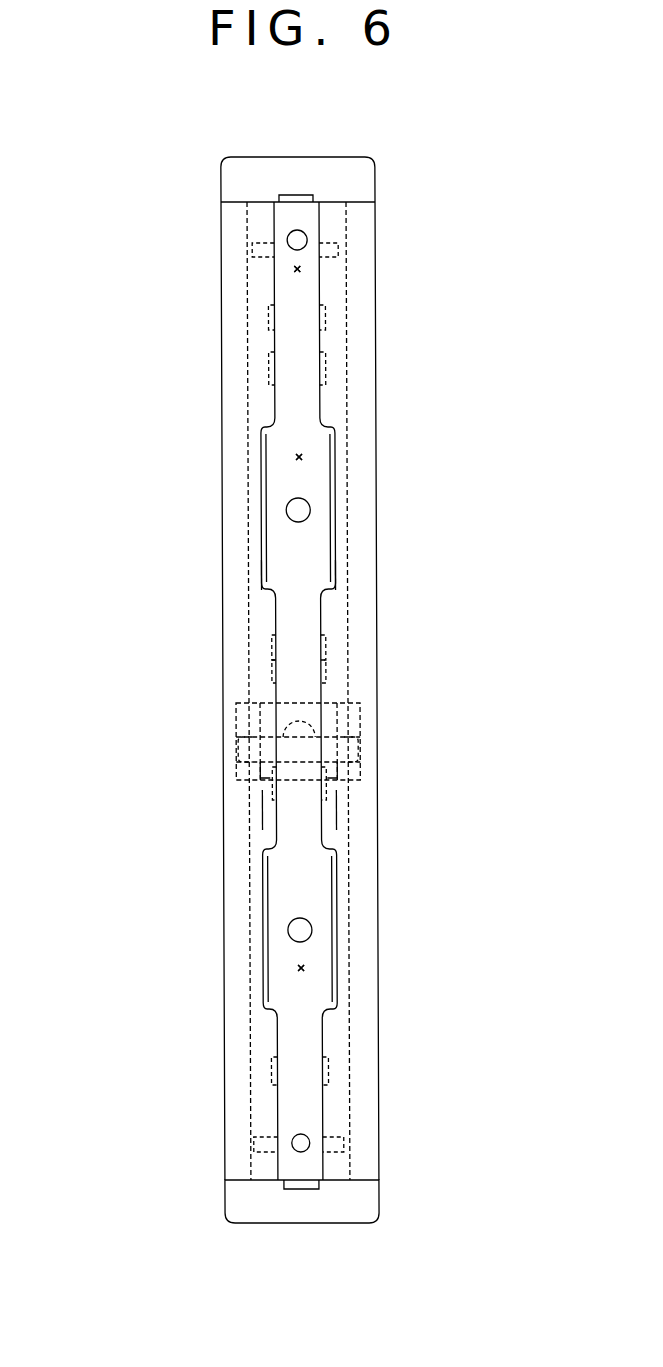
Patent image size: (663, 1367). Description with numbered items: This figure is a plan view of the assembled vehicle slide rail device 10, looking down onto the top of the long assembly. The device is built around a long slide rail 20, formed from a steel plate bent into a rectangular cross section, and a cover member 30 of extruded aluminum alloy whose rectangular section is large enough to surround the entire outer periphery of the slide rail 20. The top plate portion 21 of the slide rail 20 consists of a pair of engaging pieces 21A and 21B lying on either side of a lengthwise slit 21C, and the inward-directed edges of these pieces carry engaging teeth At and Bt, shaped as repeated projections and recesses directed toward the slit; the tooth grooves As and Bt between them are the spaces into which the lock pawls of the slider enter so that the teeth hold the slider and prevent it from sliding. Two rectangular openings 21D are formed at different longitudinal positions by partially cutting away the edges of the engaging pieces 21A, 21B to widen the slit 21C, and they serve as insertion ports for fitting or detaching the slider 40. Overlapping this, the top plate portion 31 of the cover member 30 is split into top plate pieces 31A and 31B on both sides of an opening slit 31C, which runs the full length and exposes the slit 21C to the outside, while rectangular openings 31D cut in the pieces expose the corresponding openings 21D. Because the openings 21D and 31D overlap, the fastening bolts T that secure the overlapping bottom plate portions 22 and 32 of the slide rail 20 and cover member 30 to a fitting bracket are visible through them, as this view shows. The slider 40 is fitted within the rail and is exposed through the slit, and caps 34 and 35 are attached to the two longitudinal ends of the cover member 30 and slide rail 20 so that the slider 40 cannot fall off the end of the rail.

The vehicle slide rail device 10 is at (437, 187).
The slide rail 20 is at (340, 264).
The top plate portion 21 is at (298, 508).
The engaging piece 21A is at (258, 610).
The engaging piece 21B is at (335, 617).
The slit 21C is at (295, 268).
The rectangular opening 21D is at (295, 457).
The bottom plate portion 22 is at (297, 285).
The cover member 30 is at (370, 327).
The top plate portion 31 is at (300, 929).
The top plate piece 31A is at (235, 807).
The top plate piece 31B is at (360, 805).
The opening slit 31C is at (220, 263).
The rectangular opening 31D is at (224, 720).
The bottom plate portion 32 is at (306, 411).
The cap 34 is at (334, 170).
The cap 35 is at (358, 1206).
The slider 40 is at (355, 746).
The tooth groove As is at (198, 300).
The engaging teeth At is at (198, 345).
The tooth groove Bs is at (402, 291).
The engaging teeth Bt is at (402, 363).
The fastening bolt T is at (297, 510).